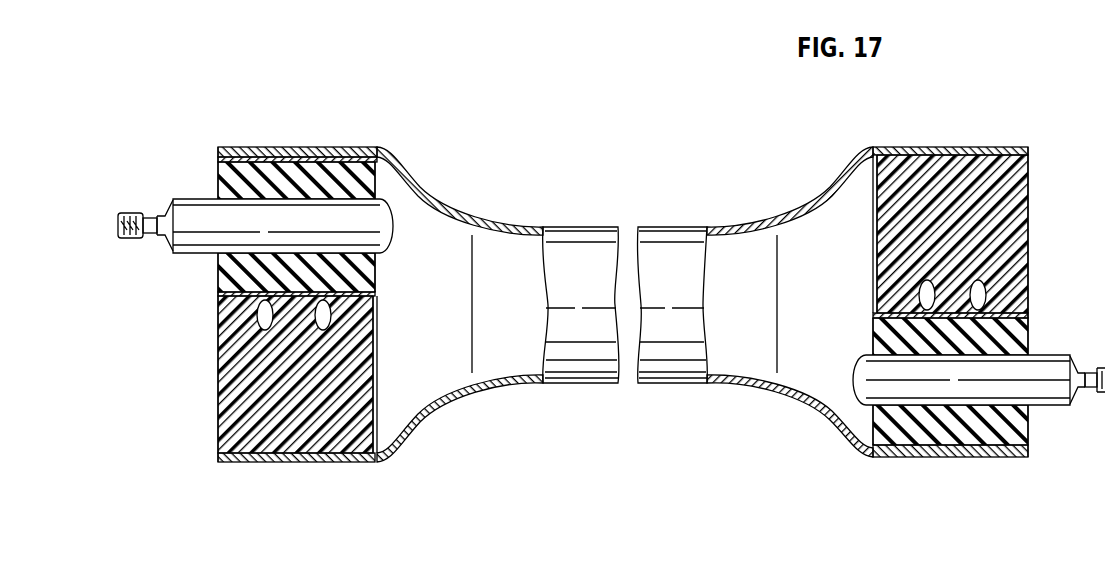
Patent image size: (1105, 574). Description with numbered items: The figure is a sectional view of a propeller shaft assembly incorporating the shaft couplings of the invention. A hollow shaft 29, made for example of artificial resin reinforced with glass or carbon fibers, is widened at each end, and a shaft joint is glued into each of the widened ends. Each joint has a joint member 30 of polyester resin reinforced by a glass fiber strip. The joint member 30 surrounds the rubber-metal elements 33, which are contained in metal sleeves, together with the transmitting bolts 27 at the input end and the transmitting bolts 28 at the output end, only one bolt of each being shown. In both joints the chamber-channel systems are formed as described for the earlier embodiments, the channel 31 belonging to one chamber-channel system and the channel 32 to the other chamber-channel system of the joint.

The transmitting bolt 27 is at (235, 213).
The transmitting bolt 28 is at (1002, 390).
The hollow shaft 29 is at (465, 393).
The joint member 30 is at (238, 423).
The channel 31 is at (267, 327).
The channel 32 is at (323, 322).
The rubber-metal element 33 is at (341, 180).